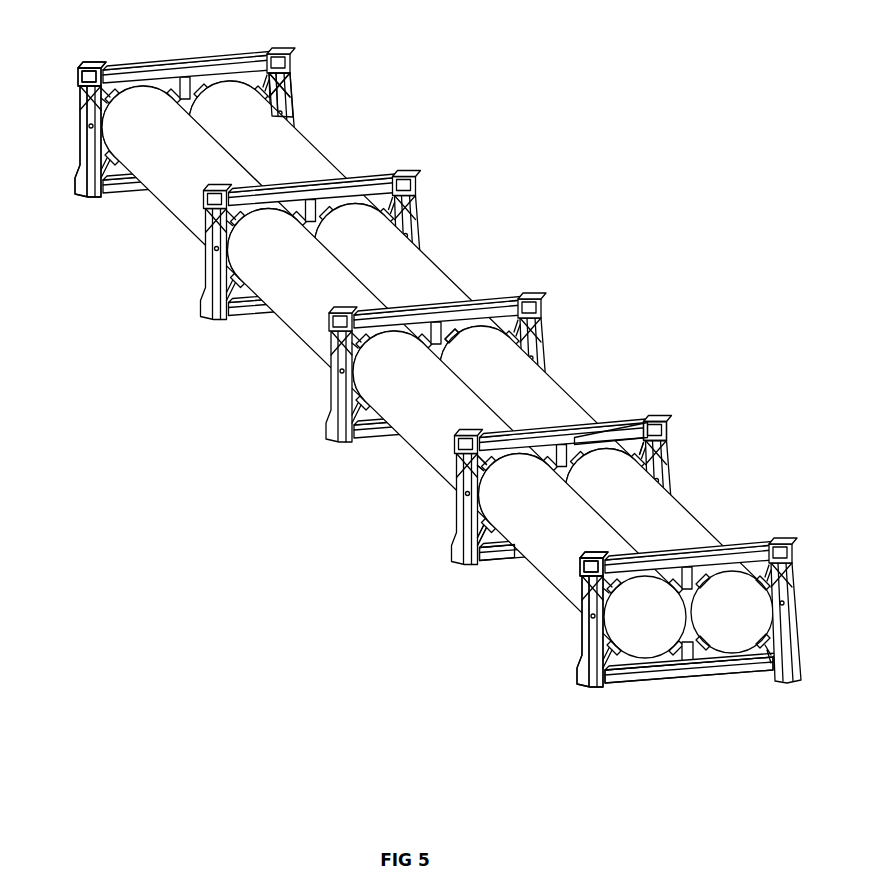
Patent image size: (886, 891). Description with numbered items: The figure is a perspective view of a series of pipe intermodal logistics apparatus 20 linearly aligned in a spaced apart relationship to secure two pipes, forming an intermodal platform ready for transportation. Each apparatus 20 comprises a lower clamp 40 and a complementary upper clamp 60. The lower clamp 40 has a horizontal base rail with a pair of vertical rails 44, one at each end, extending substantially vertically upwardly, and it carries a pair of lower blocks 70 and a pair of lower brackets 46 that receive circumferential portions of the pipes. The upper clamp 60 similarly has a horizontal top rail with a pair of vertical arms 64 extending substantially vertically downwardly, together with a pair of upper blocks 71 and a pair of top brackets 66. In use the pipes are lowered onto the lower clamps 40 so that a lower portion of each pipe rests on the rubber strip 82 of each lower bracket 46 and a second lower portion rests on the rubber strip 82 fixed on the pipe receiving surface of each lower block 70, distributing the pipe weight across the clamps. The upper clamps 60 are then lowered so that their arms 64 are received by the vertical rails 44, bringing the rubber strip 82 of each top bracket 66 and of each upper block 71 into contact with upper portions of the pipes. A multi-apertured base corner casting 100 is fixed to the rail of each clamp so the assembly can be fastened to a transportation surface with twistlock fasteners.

The base corner casting 100 is at (439, 369).
The pipe intermodal logistics apparatus 20 is at (318, 70).
The upper clamp 60 is at (79, 91).
The lower clamp 40 is at (79, 146).
The vertical arm 64 is at (290, 100).
The vertical rail 44 is at (292, 114).
The upper block 71 is at (451, 331).
The top bracket 66 is at (628, 432).
The rubber strip 82 is at (495, 470).
The lower bracket 46 is at (490, 566).
The lower block 70 is at (680, 666).